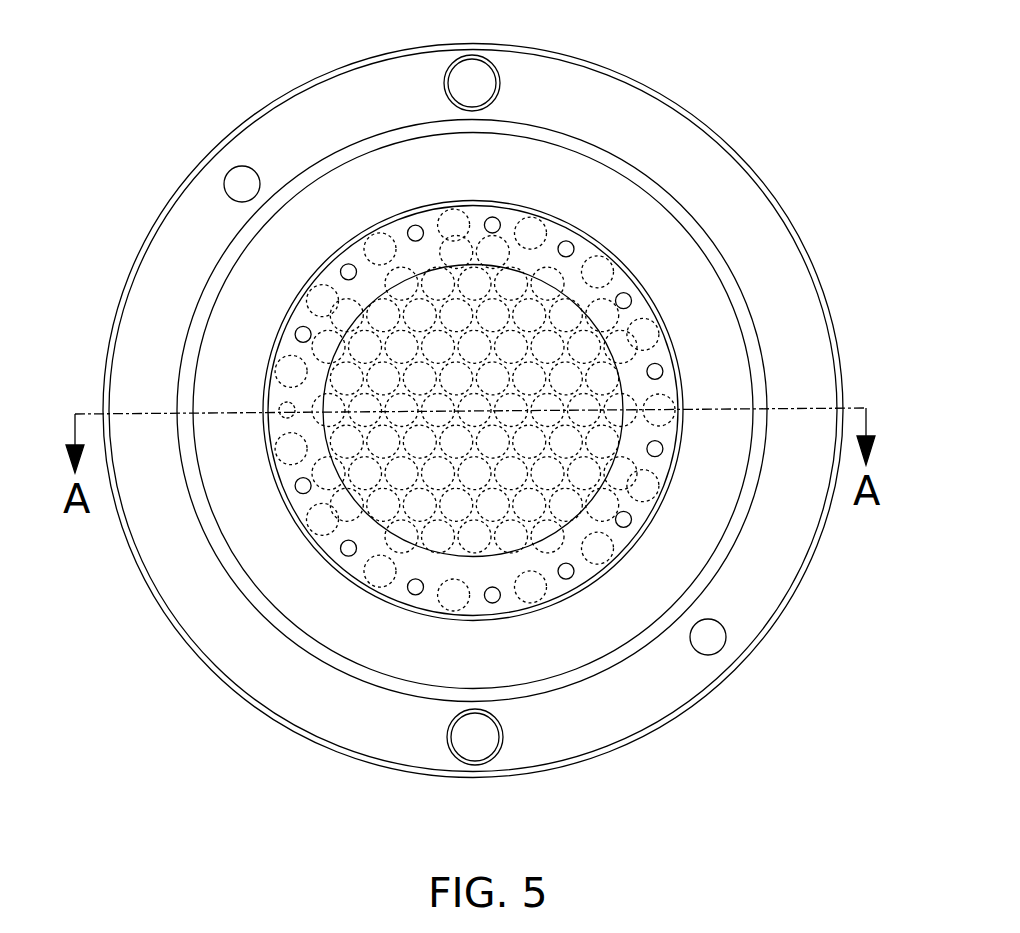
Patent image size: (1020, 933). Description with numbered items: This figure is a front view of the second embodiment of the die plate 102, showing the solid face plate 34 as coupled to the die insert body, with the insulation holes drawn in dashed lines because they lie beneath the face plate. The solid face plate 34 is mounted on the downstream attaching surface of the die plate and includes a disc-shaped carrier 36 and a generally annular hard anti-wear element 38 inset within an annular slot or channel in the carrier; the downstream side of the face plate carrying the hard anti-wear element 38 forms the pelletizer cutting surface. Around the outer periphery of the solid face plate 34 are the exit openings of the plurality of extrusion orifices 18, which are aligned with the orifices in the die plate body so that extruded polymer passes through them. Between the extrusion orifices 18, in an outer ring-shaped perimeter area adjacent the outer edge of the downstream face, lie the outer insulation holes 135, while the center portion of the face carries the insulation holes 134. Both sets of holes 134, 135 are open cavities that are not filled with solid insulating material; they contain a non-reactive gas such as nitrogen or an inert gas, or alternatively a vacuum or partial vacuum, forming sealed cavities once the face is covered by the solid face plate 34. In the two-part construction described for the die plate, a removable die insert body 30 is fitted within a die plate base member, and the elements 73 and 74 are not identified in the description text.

The die plate 102 is at (473, 399).
The flange plate 73 is at (473, 411).
The removable die insert body 30 is at (533, 411).
The mounting holes 74 is at (480, 410).
The disc-shaped carrier 36 is at (561, 384).
The solid face plate 34 is at (486, 318).
The outer insulation holes 135 is at (534, 341).
The hard anti-wear element 38 is at (552, 335).
The extrusion orifices 18 is at (164, 366).
The insulation holes 134 is at (384, 332).